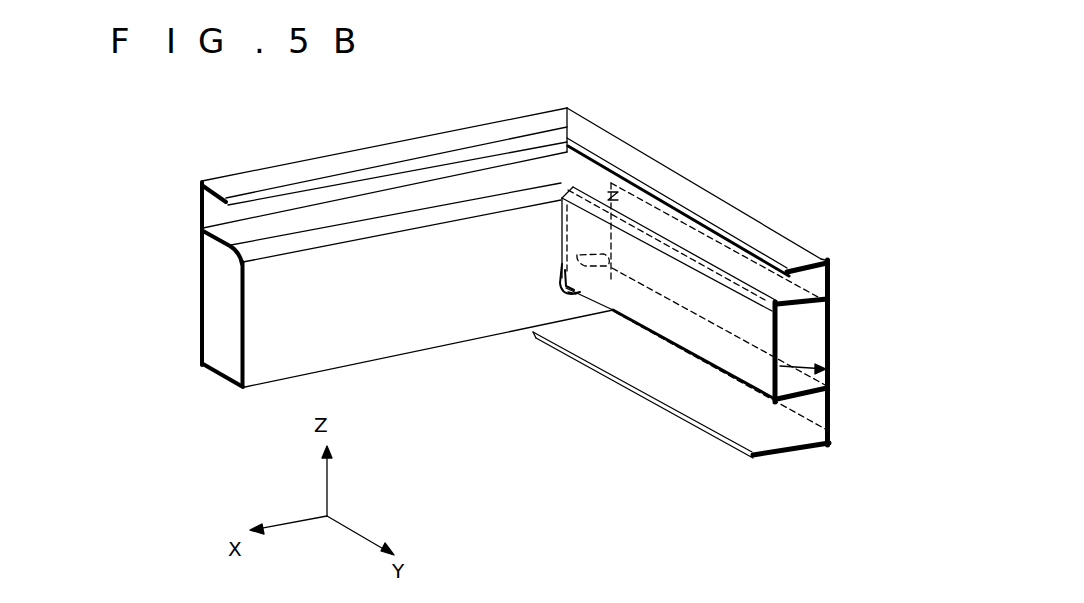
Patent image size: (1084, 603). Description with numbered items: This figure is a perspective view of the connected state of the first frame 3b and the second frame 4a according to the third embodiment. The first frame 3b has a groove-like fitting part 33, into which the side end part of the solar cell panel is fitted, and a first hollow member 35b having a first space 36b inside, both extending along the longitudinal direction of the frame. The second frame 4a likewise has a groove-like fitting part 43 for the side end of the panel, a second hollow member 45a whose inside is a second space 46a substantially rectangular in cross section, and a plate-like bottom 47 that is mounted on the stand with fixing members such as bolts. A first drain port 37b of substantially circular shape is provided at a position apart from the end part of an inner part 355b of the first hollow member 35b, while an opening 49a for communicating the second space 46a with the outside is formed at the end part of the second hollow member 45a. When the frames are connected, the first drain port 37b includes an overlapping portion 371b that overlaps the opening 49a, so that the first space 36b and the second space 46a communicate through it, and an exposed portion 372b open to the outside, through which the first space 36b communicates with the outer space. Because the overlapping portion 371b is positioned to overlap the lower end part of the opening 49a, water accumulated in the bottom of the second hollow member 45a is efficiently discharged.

The first frame 3b is at (398, 143).
The fitting part 33 is at (201, 206).
The first hollow member 35b is at (352, 348).
The inner part 355b is at (238, 298).
The first space 36b is at (198, 352).
The second frame 4a is at (710, 188).
The opening 49a is at (618, 195).
The fitting part 43 is at (830, 262).
The second hollow member 45a is at (740, 360).
The second space 46a is at (830, 376).
The bottom 47 is at (787, 453).
The exposed portion 372b is at (556, 293).
The first drain port 37b is at (563, 300).
The overlapping portion 371b is at (613, 300).